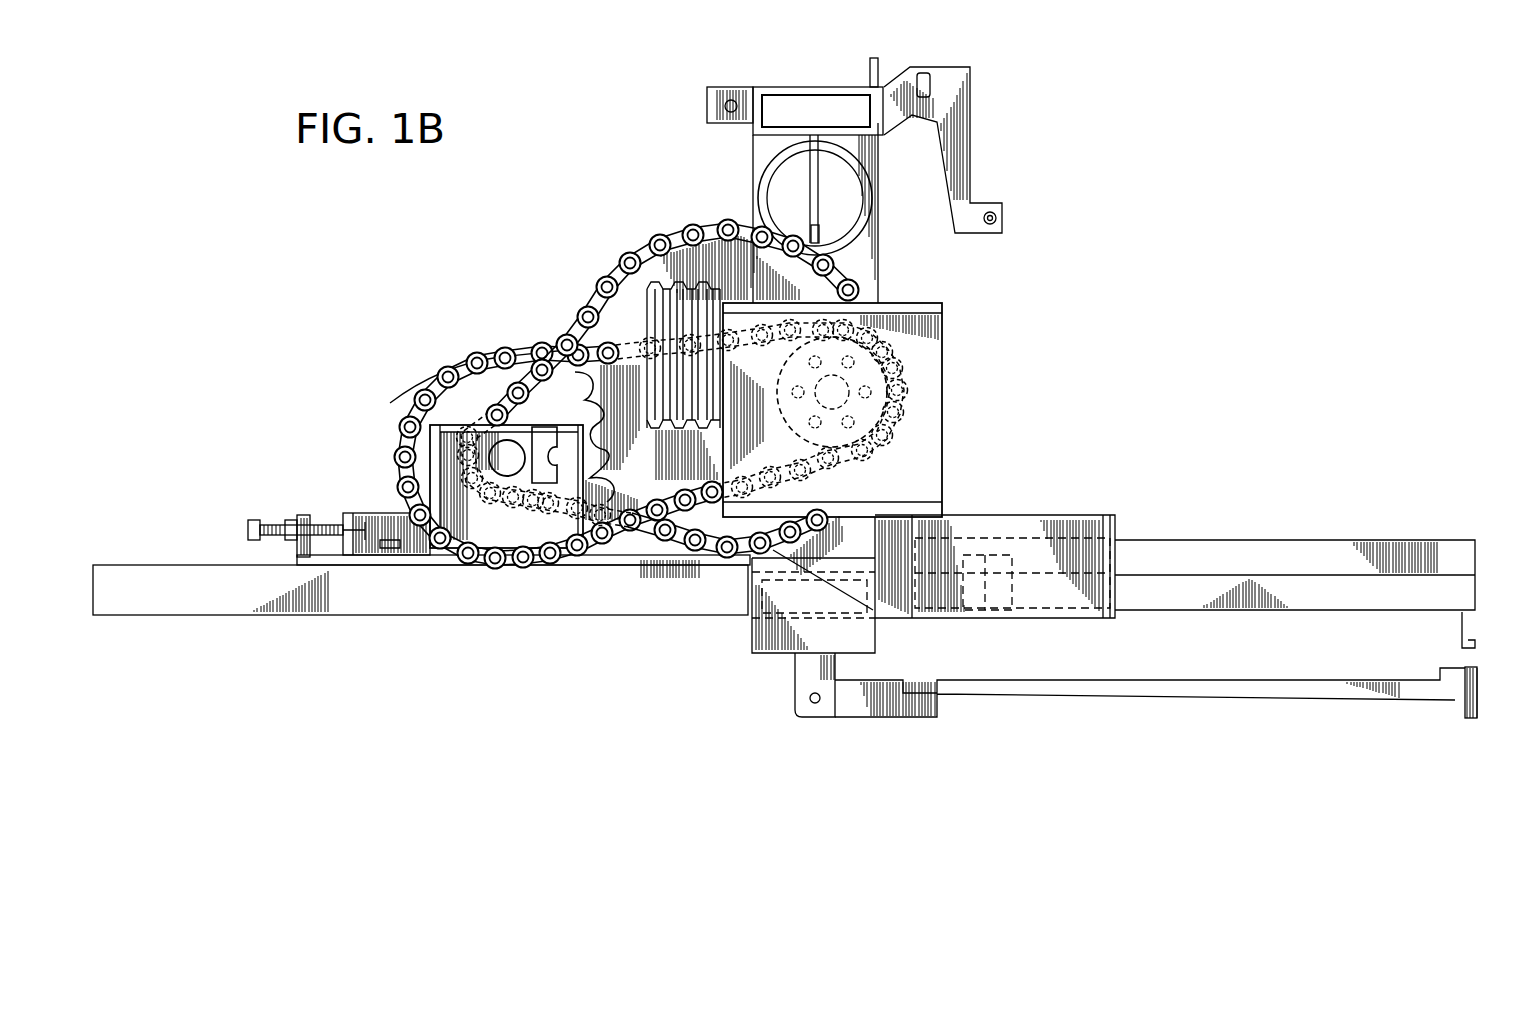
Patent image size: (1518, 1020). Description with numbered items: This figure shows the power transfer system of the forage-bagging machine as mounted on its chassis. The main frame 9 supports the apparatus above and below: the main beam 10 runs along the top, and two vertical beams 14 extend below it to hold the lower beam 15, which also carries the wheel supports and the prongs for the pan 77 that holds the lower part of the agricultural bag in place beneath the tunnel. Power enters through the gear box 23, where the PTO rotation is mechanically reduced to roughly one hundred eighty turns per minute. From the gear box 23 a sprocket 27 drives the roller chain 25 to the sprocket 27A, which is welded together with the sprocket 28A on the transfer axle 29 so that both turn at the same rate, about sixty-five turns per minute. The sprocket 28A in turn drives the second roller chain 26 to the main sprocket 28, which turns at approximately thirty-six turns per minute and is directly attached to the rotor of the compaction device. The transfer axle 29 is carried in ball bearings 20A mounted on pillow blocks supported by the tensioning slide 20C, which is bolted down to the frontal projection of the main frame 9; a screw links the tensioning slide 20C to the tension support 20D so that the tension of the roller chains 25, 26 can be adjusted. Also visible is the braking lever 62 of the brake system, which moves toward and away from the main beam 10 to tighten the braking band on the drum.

The main frame 9 is at (563, 592).
The main beam 10 is at (840, 105).
The vertical beams 14 is at (866, 258).
The lower beam 15 is at (808, 598).
The ball bearings 20A is at (470, 527).
The tensioning slide 20C is at (378, 548).
The tension support 20D is at (303, 512).
The gear box 23 is at (920, 352).
The roller chain 25 is at (527, 572).
The second roller chain 26 is at (620, 252).
The sprocket 27 is at (876, 405).
The sprocket 27A is at (468, 402).
The main sprocket 28 is at (718, 250).
The sprocket 28A is at (511, 428).
The transfer axle 29 is at (500, 455).
The braking lever 62 is at (962, 98).
The pan 77 is at (1283, 658).